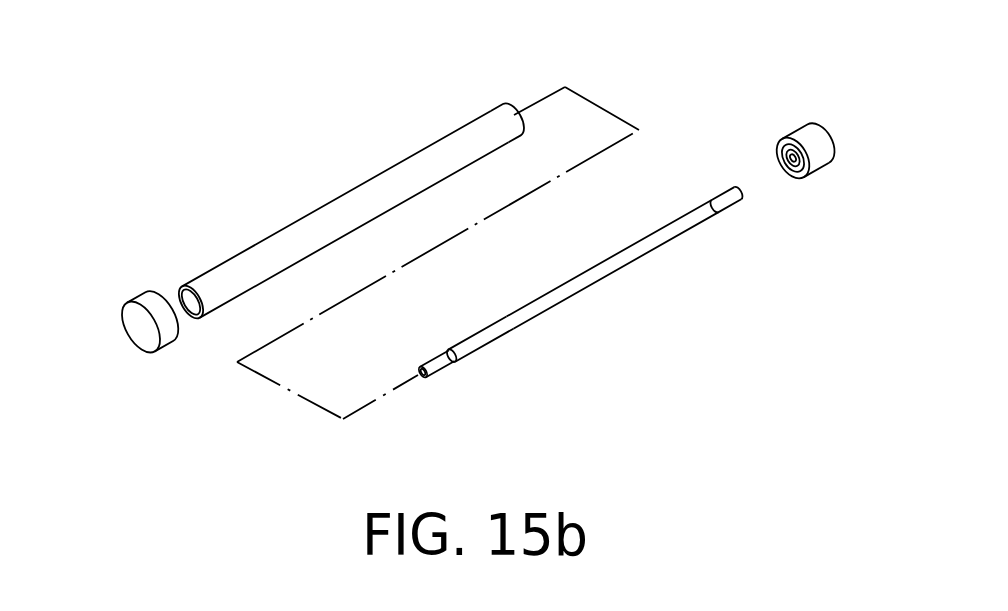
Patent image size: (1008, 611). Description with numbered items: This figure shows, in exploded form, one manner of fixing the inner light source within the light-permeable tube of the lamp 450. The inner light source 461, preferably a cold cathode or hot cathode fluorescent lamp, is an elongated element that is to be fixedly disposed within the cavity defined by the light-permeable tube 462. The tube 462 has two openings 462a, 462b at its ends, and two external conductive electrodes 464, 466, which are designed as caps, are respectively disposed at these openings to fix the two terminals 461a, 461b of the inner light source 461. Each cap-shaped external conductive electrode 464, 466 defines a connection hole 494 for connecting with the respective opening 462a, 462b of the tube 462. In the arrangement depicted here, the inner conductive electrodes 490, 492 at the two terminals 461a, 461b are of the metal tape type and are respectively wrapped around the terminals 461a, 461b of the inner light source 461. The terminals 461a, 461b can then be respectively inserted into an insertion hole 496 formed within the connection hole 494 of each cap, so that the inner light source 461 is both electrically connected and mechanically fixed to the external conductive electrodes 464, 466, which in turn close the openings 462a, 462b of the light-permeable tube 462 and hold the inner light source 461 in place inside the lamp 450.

The lamp 450 is at (183, 106).
The inner light source 461 is at (575, 285).
The terminal 461a is at (458, 362).
The terminal 461b is at (708, 213).
The light-permeable tube 462 is at (330, 213).
The opening 462a is at (174, 297).
The opening 462b is at (513, 112).
The external conductive electrode 464 is at (138, 307).
The external conductive electrode 466 is at (803, 131).
The inner conductive electrode 490 is at (430, 362).
The inner conductive electrode 492 is at (722, 192).
The connection hole 494 is at (792, 182).
The insertion hole 496 is at (780, 155).